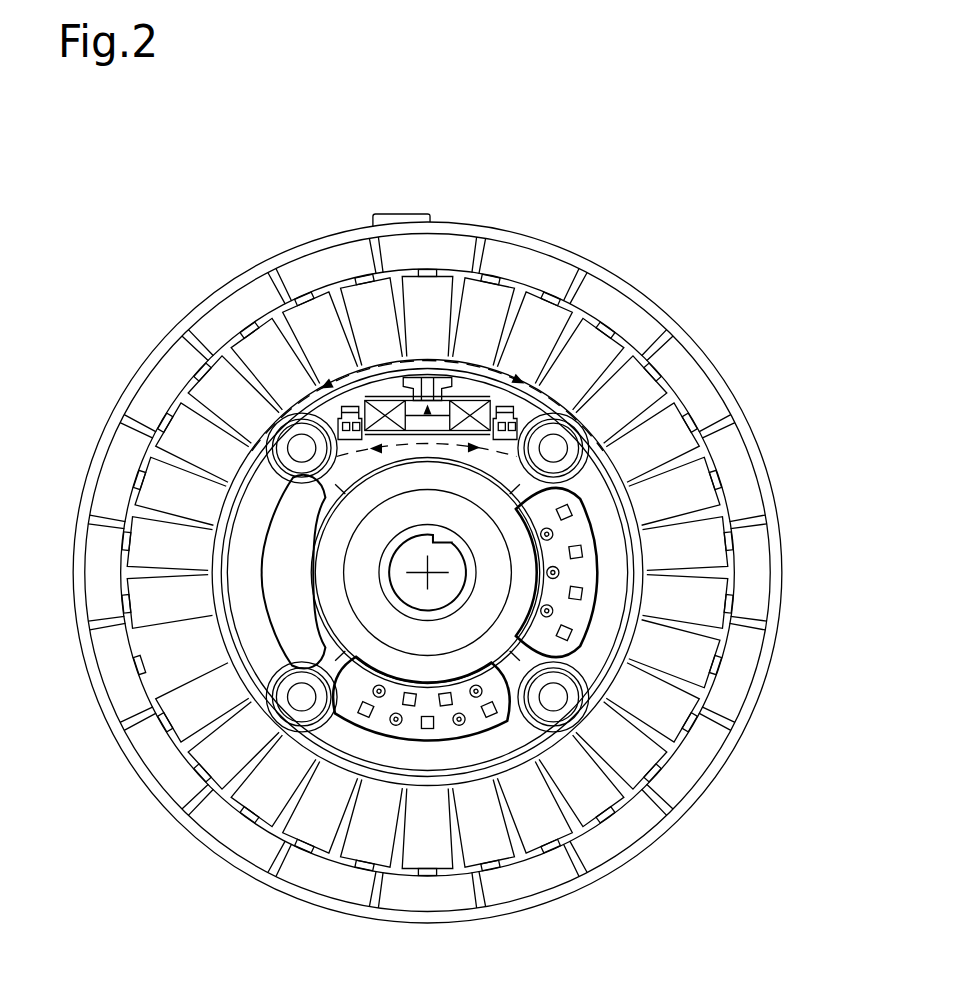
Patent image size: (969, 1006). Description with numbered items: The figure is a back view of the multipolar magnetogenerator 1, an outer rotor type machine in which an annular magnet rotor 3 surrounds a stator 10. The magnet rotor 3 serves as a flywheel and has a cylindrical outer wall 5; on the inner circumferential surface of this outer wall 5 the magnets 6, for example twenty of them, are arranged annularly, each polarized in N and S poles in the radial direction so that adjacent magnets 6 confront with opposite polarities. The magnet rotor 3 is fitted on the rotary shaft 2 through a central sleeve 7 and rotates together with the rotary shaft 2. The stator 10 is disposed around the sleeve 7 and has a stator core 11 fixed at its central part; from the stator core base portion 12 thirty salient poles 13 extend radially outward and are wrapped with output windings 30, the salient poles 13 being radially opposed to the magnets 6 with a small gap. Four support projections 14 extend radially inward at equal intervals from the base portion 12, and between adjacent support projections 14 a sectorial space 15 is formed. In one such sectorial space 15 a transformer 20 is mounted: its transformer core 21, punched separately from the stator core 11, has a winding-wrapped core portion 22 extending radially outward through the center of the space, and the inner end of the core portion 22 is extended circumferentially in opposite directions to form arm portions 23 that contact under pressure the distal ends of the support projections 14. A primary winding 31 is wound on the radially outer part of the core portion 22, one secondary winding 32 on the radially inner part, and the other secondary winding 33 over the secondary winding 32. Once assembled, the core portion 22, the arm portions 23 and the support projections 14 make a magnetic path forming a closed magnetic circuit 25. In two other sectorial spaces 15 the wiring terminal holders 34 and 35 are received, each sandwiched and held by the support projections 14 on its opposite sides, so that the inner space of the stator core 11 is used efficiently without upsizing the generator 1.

The generator 1 is at (437, 178).
The rotary shaft 2 is at (447, 587).
The magnet rotor 3 is at (163, 316).
The cylindrical outer wall 5 is at (508, 231).
The magnets 6 is at (297, 273).
The sleeve 7 is at (358, 563).
The stator 10 is at (105, 520).
The stator core 11 is at (427, 573).
The stator core base portion 12 is at (476, 385).
The salient poles 13 is at (240, 800).
The support projections 14 is at (337, 488).
The sectorial space 15 is at (300, 552).
The transformer 20 is at (362, 360).
The transformer core 21 is at (432, 459).
The winding-wrapped core portion 22 is at (432, 378).
The arm portions 23 is at (466, 458).
The closed magnetic circuit 25 is at (322, 383).
The output windings 30 is at (548, 305).
The primary winding 31 is at (350, 390).
The secondary winding 32 is at (397, 437).
The secondary winding 33 is at (375, 456).
The wiring terminal holder 34 is at (590, 558).
The wiring terminal holder 35 is at (410, 740).